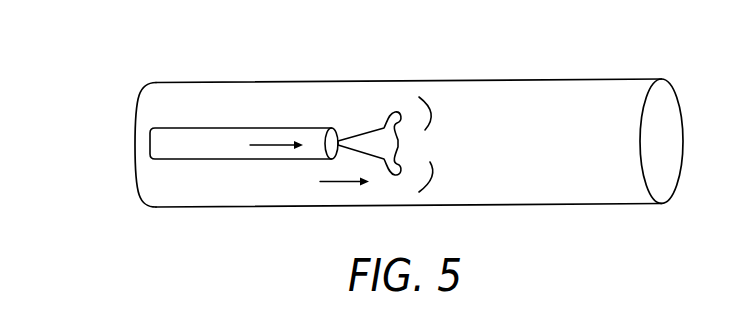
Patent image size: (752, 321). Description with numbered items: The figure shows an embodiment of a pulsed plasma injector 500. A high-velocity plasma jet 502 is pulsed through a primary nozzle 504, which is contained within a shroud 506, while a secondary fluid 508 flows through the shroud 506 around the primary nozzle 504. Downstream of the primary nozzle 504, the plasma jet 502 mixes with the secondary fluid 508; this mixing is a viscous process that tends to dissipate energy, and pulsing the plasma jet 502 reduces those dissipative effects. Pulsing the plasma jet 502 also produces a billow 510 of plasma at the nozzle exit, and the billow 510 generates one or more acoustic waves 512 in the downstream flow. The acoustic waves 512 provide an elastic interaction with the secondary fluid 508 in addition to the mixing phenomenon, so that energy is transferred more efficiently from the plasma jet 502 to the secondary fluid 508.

The pulsed plasma injector 500 is at (126, 47).
The high-velocity plasma jet 502 is at (284, 138).
The primary nozzle 504 is at (218, 127).
The shroud 506 is at (337, 80).
The secondary fluid 508 is at (333, 183).
The billow 510 is at (380, 131).
The acoustic waves 512 is at (437, 112).